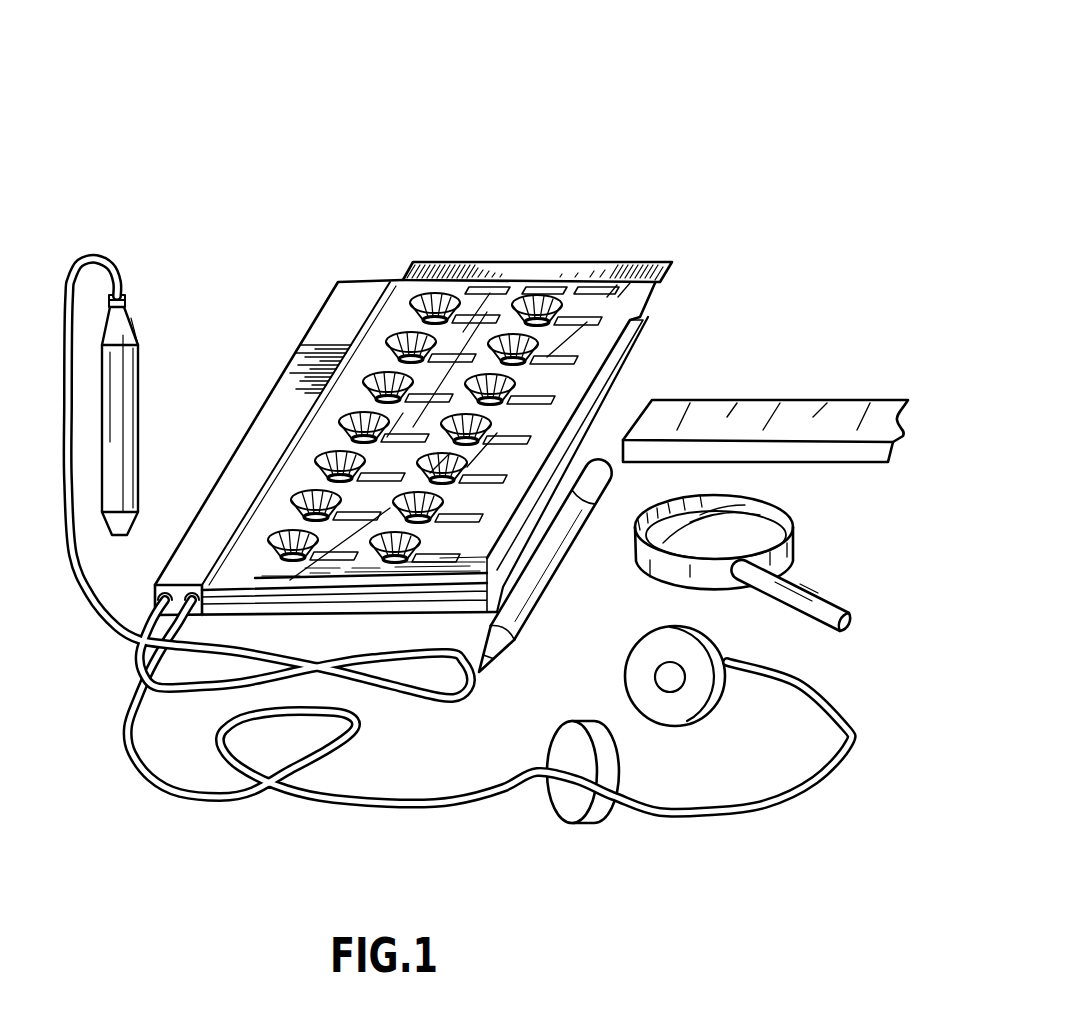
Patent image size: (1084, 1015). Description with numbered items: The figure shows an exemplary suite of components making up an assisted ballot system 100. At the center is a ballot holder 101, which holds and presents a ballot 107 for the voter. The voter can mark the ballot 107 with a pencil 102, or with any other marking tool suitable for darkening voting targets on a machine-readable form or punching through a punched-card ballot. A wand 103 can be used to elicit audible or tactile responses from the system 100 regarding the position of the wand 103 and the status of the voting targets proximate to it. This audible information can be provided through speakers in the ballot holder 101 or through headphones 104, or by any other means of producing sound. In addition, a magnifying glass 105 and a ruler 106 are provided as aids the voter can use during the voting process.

The assisted ballot system 100 is at (689, 123).
The ballot holder 101 is at (380, 283).
The pencil 102 is at (500, 657).
The wand 103 is at (140, 352).
The headphones 104 is at (595, 826).
The magnifying glass 105 is at (797, 539).
The ruler 106 is at (906, 402).
The ballot 107 is at (555, 262).